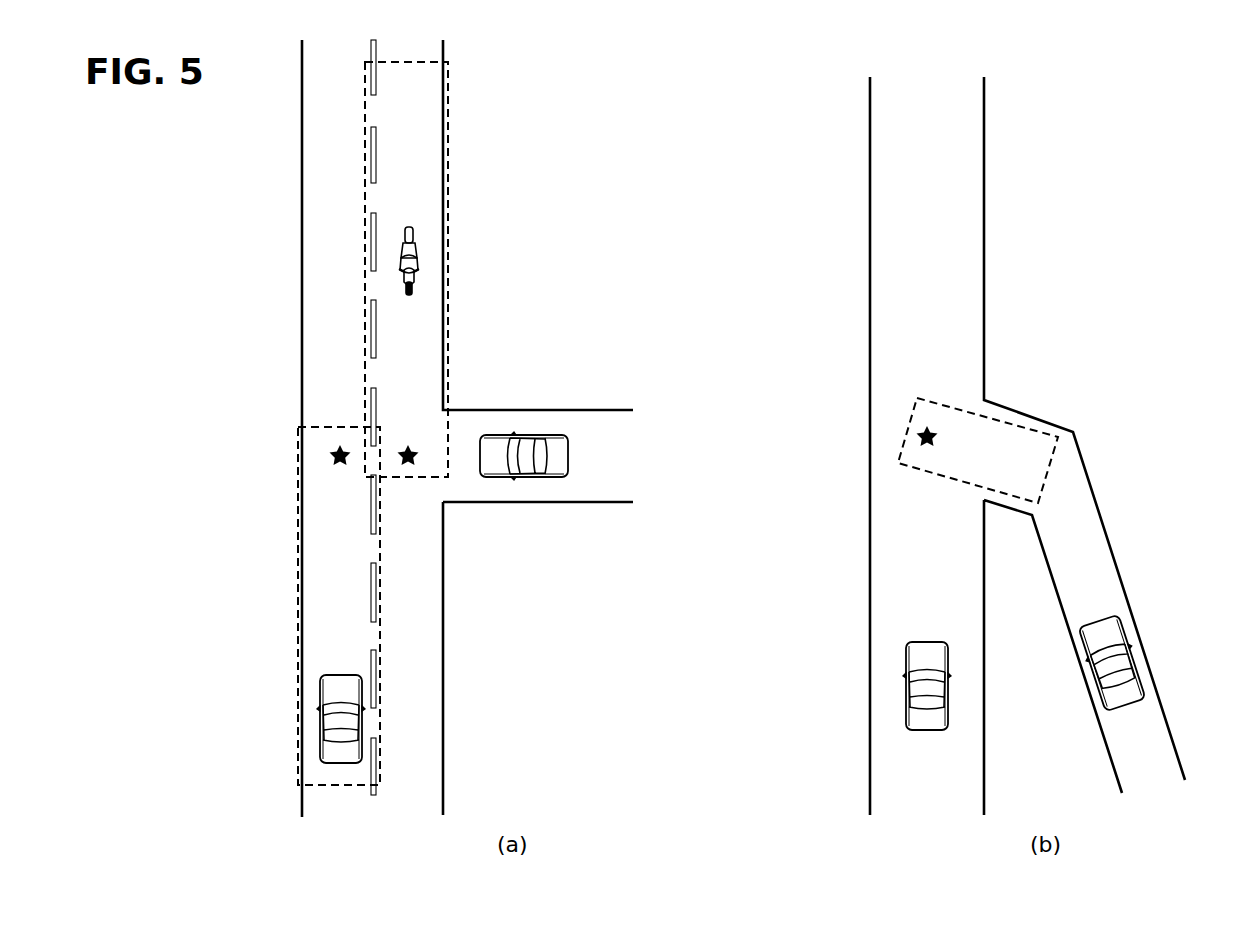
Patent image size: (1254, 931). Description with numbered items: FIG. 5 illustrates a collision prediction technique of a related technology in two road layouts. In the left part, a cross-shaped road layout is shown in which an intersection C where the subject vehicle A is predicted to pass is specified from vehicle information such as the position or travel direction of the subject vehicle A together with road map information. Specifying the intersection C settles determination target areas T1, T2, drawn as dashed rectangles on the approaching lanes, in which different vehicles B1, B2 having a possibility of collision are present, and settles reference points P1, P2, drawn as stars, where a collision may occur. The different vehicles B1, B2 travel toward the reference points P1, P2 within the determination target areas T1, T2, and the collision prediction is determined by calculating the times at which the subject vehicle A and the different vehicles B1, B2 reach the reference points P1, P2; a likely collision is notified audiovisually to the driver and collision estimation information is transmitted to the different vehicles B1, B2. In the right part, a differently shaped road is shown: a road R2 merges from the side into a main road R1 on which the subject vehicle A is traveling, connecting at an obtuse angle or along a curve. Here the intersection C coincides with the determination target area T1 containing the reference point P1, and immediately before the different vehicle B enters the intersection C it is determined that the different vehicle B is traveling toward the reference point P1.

The determination target area T1 is at (449, 150).
The determination target area T2 is at (298, 604).
The different vehicle B1 is at (421, 256).
The different vehicle B2 is at (320, 722).
The different vehicle B is at (1133, 655).
The subject vehicle A is at (528, 436).
The intersection C is at (398, 416).
The reference point P1 is at (408, 468).
The reference point P2 is at (340, 445).
The main road R1 is at (869, 167).
The road R2 is at (1107, 533).